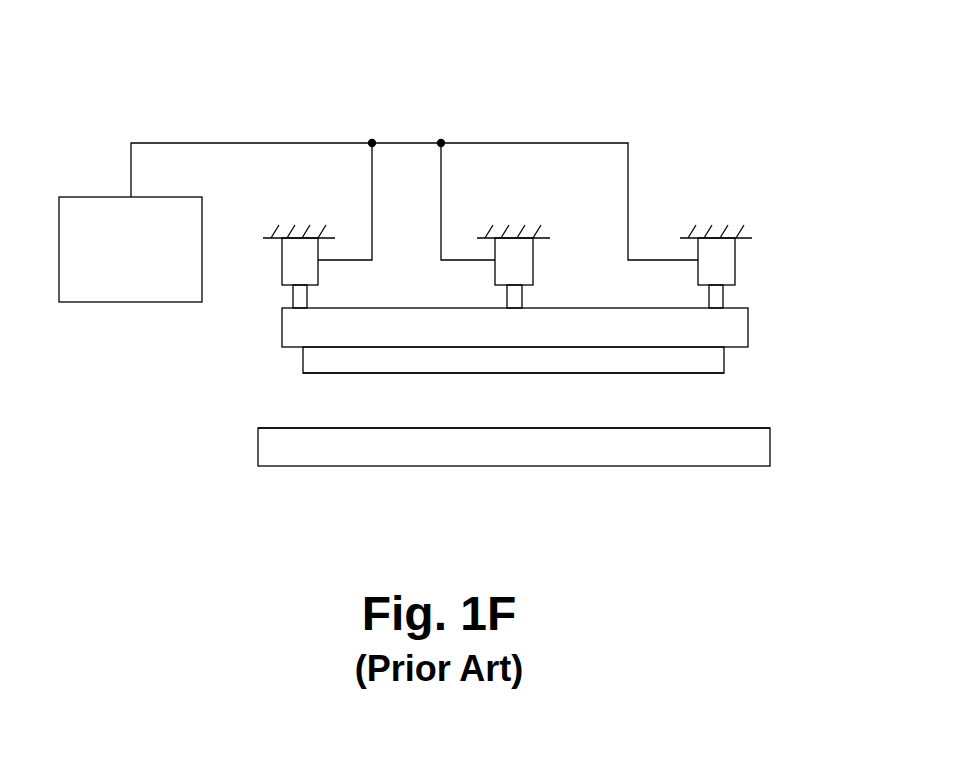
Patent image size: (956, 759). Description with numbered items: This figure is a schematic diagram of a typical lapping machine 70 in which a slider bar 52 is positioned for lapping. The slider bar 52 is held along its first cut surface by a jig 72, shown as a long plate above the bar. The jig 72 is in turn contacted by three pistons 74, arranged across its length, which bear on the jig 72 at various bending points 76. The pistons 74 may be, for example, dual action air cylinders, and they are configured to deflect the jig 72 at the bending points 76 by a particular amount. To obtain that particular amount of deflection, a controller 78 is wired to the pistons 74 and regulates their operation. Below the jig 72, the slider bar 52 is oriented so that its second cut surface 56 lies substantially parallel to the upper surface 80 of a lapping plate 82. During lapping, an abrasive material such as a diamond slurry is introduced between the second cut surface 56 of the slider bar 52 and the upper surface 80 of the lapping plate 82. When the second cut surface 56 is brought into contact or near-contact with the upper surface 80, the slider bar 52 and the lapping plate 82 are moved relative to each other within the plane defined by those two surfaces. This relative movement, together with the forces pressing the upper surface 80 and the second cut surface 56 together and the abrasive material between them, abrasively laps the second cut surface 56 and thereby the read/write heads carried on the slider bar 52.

The lapping machine 70 is at (605, 118).
The controller 78 is at (137, 286).
The pistons 74 is at (296, 273).
The bending points 76 is at (308, 308).
The jig 72 is at (735, 323).
The slider bar 52 is at (712, 358).
The second cut surface 56 is at (683, 375).
The lapping plate 82 is at (581, 452).
The upper surface 80 is at (285, 427).